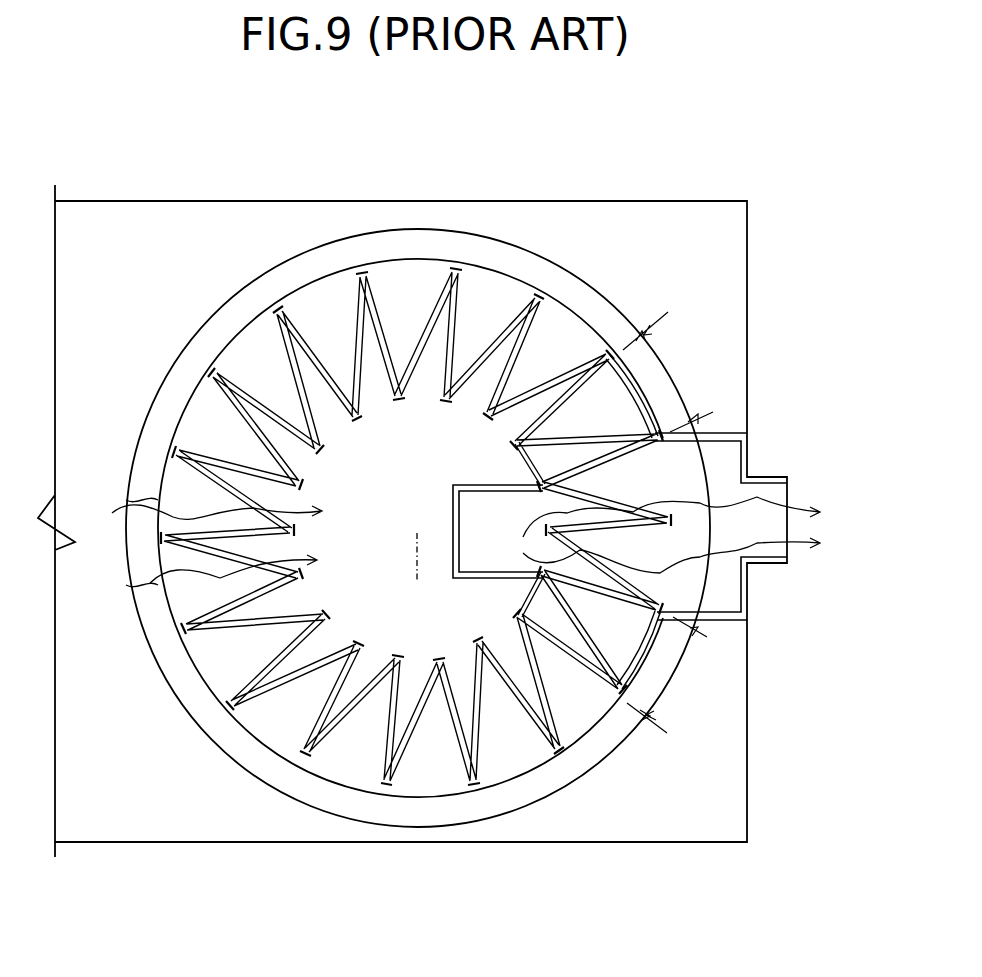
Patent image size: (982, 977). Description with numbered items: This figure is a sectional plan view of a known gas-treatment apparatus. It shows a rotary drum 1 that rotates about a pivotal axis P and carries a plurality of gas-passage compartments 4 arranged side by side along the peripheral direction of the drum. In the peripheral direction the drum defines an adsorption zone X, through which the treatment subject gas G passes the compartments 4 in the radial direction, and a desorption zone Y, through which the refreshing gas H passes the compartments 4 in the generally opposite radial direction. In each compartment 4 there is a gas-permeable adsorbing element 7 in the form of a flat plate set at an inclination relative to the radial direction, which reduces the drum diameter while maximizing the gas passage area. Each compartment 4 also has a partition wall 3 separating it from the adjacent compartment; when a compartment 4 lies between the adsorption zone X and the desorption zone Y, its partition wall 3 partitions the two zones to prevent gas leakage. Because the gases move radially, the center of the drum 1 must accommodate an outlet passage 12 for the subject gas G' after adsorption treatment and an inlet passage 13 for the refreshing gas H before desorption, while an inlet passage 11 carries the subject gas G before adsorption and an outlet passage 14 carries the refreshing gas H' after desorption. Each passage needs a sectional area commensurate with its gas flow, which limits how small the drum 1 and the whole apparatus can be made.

The rotary drum 1 is at (237, 713).
The partition wall 3 is at (440, 382).
The gas-passage compartment 4 is at (573, 333).
The gas-permeable adsorbing element 7 is at (445, 285).
The inlet passage 11 is at (412, 521).
The outlet passage 12 is at (361, 452).
The inlet passage 13 is at (498, 531).
The outlet passage 14 is at (727, 588).
The adsorption zone X is at (570, 787).
The desorption zone Y is at (747, 526).
The treatment subject gas G is at (204, 544).
The subject gas after adsorption treatment G' is at (360, 543).
The pivotal axis P is at (417, 573).
The refreshing gas H is at (597, 537).
The refreshing gas after desorption treatment H' is at (781, 527).